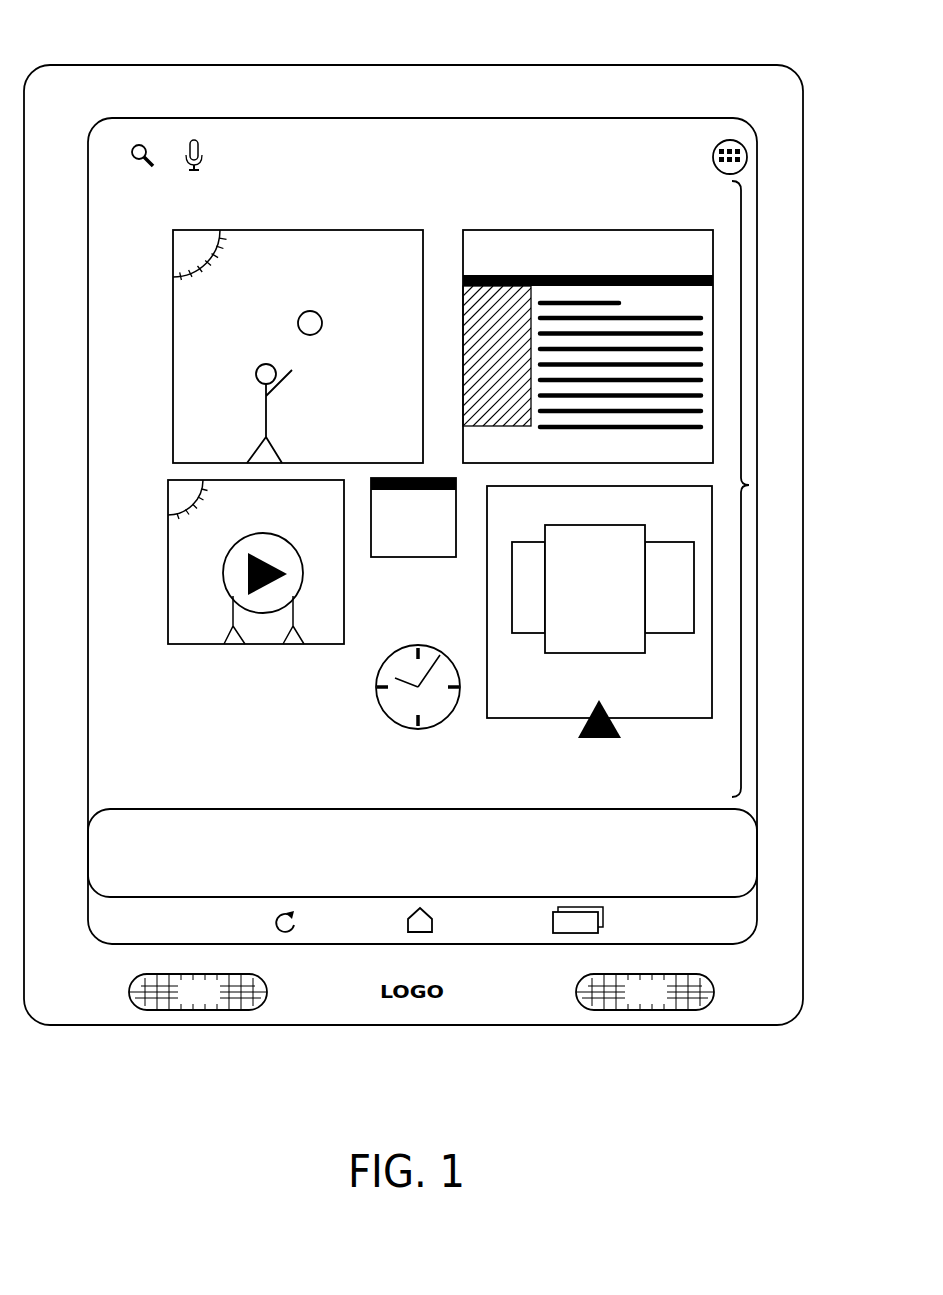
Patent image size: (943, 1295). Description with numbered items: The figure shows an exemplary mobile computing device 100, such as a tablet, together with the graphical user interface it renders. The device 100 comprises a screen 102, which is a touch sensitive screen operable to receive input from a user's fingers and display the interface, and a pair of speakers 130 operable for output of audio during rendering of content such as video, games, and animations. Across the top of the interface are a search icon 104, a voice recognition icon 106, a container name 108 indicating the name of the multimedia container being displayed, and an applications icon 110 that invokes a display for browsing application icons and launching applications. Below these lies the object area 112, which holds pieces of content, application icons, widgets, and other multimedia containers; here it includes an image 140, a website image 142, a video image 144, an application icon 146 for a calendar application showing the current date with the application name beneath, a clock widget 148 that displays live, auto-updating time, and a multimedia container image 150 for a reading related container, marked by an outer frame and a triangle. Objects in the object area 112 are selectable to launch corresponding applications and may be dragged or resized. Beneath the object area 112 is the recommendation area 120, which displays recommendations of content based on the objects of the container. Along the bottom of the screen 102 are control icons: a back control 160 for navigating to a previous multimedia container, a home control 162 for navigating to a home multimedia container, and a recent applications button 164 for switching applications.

The device 100 is at (100, 60).
The screen 102 is at (549, 114).
The search icon 104 is at (139, 136).
The voice recognition icon 106 is at (196, 133).
The container name 108 is at (443, 128).
The applications icon 110 is at (730, 136).
The object area 112 is at (756, 485).
The recommendation area 120 is at (422, 853).
The speakers 130 is at (421, 992).
The image 140 is at (300, 226).
The website image 142 is at (592, 226).
The video image 144 is at (258, 652).
The application icon 146 is at (405, 600).
The widget 148 is at (417, 737).
The multimedia container image 150 is at (638, 728).
The back control 160 is at (304, 924).
The home control 162 is at (446, 924).
The recent applications button 164 is at (612, 922).